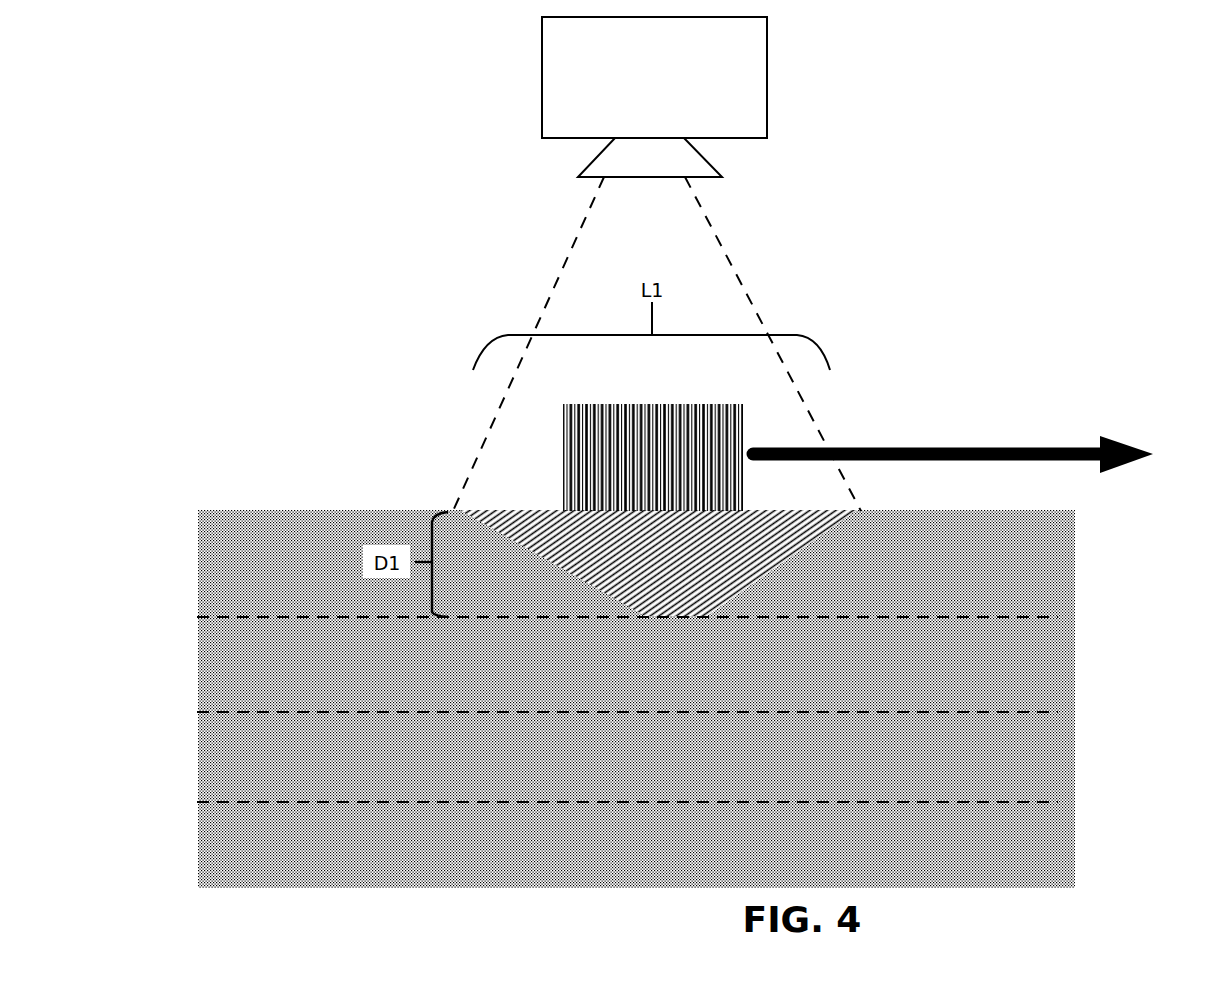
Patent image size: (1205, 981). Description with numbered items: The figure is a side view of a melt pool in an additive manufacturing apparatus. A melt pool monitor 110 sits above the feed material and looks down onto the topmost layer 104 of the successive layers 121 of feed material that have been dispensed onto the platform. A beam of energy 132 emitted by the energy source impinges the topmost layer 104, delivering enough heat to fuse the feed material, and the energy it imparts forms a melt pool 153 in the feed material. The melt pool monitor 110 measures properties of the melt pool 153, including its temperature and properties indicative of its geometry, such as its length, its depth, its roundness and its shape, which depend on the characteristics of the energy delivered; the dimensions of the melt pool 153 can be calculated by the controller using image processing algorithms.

The melt pool monitor 110 is at (654, 77).
The beam of energy 132 is at (672, 421).
The melt pool 153 is at (790, 547).
The topmost layer 104 is at (1060, 572).
The successive layers 121 is at (178, 513).